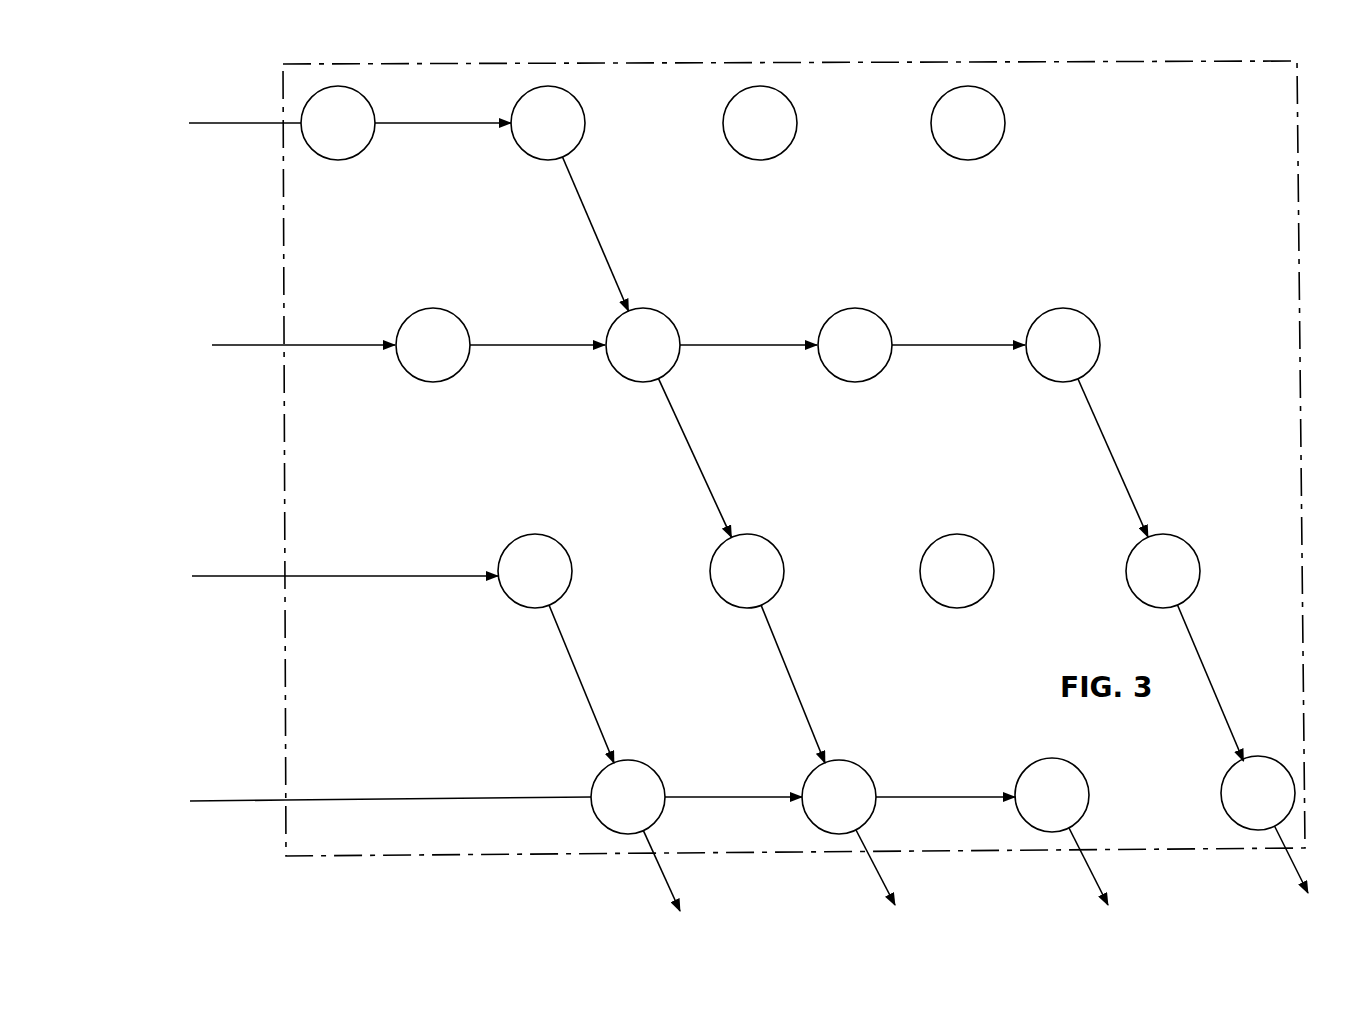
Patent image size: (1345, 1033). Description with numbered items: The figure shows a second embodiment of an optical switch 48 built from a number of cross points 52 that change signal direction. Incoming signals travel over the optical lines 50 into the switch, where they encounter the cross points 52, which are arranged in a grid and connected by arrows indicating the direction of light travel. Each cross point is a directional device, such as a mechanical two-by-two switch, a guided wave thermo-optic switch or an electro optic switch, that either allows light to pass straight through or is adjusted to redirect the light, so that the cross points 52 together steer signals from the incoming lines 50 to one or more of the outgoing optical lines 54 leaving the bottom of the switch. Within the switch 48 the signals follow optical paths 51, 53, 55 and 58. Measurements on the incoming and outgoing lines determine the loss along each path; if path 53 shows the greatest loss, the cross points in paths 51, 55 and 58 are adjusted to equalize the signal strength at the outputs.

The optical switch 48 is at (794, 442).
The optical lines 50 is at (292, 435).
The optical path 51 is at (522, 195).
The cross points 52 is at (798, 431).
The optical path 53 is at (484, 646).
The outgoing optical lines 54 is at (948, 868).
The optical path 55 is at (874, 513).
The optical path 58 is at (650, 774).